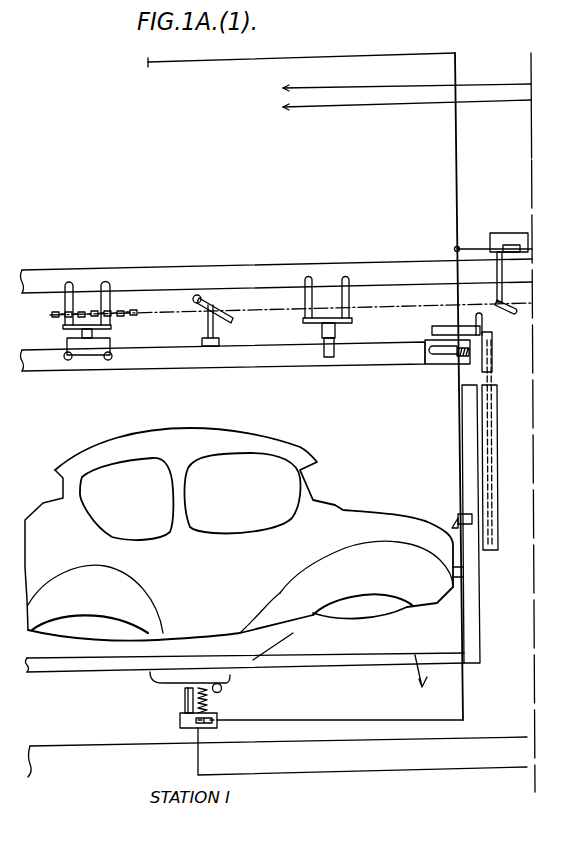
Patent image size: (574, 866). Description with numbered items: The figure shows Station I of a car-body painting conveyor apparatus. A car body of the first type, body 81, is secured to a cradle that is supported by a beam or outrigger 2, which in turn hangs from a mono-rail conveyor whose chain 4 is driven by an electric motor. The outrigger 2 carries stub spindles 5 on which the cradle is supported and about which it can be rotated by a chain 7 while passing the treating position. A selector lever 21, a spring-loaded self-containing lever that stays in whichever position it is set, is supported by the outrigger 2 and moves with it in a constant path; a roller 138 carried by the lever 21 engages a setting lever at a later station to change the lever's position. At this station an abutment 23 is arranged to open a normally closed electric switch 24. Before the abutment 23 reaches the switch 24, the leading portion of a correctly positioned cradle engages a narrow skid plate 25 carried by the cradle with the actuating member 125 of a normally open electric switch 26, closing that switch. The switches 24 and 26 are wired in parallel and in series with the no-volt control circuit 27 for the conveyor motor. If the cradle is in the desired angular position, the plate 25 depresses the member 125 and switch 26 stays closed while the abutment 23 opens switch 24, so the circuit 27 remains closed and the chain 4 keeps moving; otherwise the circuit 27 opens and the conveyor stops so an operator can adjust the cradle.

The outrigger 2 is at (273, 352).
The chain 4 is at (133, 308).
The stub spindles 5 is at (456, 526).
The chain 7 is at (497, 372).
The selector lever 21 is at (234, 320).
The abutment 23 is at (483, 322).
The electric switch 24 is at (519, 227).
The skid plate 25 is at (224, 684).
The electric switch 26 is at (215, 711).
The no-volt control circuit 27 is at (456, 193).
The type B1 body 81 is at (293, 455).
The actuating member 125 is at (222, 689).
The roller 138 is at (200, 296).